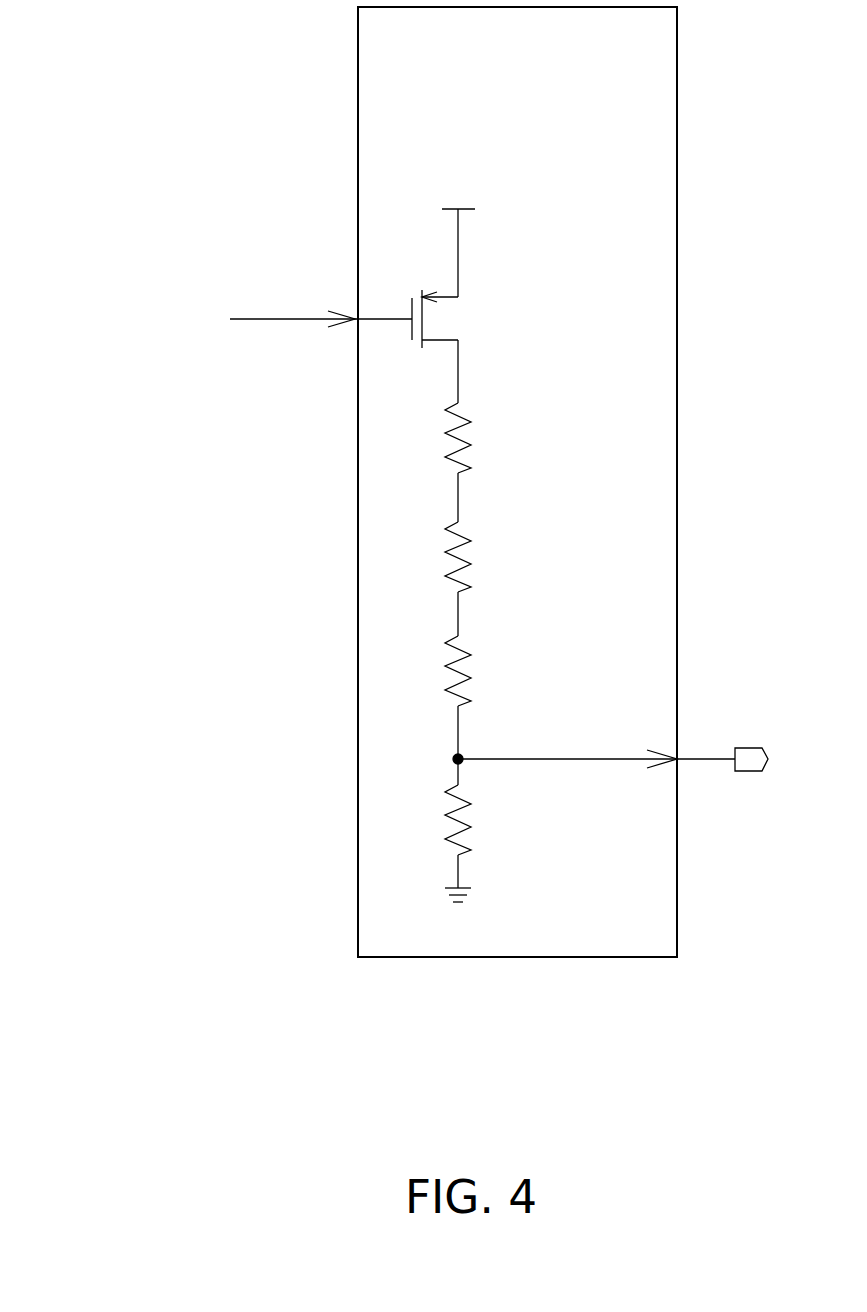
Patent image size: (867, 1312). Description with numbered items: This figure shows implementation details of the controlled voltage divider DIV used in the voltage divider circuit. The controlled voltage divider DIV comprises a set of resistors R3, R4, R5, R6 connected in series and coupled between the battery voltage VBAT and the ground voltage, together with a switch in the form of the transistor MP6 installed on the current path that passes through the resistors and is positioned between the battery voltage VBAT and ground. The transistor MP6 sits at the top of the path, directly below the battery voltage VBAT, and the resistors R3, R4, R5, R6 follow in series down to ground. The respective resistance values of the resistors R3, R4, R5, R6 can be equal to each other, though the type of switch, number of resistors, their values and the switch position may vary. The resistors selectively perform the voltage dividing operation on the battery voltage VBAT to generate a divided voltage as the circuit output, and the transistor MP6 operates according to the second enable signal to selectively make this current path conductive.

The controlled voltage divider DIV is at (547, 132).
The transistor MP6 is at (462, 346).
The resistor R3 is at (482, 462).
The resistor R4 is at (482, 579).
The resistor R5 is at (482, 697).
The resistor R6 is at (482, 830).
The battery voltage VBAT is at (455, 235).